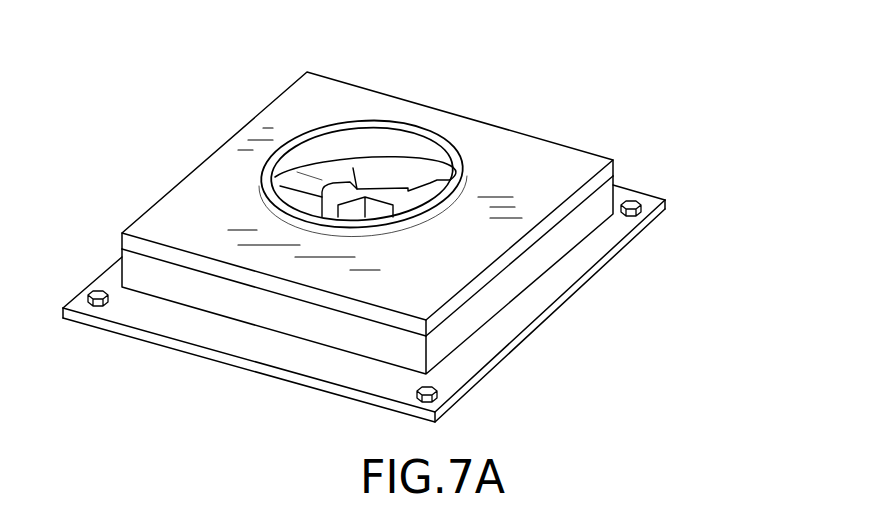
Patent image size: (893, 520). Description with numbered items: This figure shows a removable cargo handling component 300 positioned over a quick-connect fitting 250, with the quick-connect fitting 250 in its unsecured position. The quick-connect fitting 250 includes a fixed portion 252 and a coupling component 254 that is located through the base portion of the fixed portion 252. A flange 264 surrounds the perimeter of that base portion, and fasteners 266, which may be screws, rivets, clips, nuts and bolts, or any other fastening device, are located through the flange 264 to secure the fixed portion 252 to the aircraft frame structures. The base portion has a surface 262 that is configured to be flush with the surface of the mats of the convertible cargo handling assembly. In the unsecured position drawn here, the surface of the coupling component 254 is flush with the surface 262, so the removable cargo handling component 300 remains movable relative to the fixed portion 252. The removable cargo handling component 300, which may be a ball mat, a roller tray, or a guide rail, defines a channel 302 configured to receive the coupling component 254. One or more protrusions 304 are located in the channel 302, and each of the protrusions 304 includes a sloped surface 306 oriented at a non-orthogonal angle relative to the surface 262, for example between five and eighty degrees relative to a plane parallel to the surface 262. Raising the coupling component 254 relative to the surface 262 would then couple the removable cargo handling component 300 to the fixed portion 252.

The quick-connect fitting 250 is at (146, 153).
The fixed portion 252 is at (518, 268).
The coupling component 254 is at (380, 175).
The surface 262 is at (603, 158).
The flange 264 is at (592, 250).
The fasteners 266 is at (641, 200).
The removable cargo handling component 300 is at (507, 150).
The channel 302 is at (286, 142).
The protrusions 304 is at (297, 192).
The sloped surface 306 is at (323, 175).